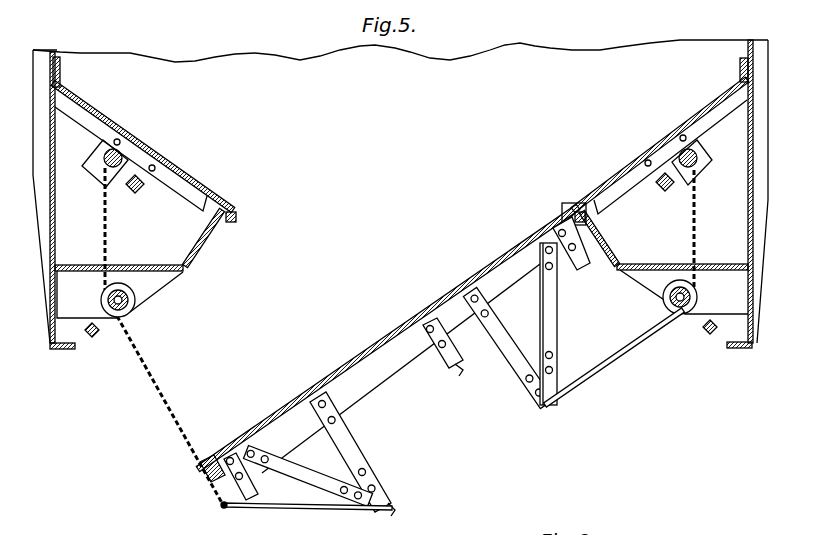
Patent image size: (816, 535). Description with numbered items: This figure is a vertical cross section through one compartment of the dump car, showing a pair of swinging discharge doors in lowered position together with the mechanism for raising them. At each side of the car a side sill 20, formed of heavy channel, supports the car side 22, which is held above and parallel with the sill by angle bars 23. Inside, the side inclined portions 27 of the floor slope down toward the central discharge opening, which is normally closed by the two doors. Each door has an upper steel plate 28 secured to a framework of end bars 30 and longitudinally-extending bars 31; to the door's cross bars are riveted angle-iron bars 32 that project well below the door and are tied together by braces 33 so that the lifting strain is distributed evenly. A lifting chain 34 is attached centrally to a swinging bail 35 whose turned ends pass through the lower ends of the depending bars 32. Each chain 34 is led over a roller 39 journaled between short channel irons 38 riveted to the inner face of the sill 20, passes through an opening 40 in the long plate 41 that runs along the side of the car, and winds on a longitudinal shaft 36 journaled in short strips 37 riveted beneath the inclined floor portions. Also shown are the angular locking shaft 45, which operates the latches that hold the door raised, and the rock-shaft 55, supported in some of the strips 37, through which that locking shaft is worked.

The side sill 20 is at (55, 347).
The side of the car 22 is at (56, 230).
The angle bar 23 is at (42, 65).
The side inclined portion of the floor 27 is at (185, 172).
The door plate 28 is at (270, 403).
The end bar 30 is at (293, 417).
The longitudinally-extending bar 31 is at (238, 490).
The depending bar 32 is at (353, 449).
The brace 33 is at (297, 475).
The lifting chain 34 is at (160, 405).
The swinging bail 35 is at (318, 508).
The shaft 36 is at (119, 153).
The strip 37 is at (131, 188).
The short channel iron 38 is at (167, 282).
The roller 39 is at (133, 303).
The opening 40 is at (100, 267).
The long plate 41 is at (147, 268).
The shaft 45 is at (98, 338).
The rock-shaft 55 is at (143, 189).